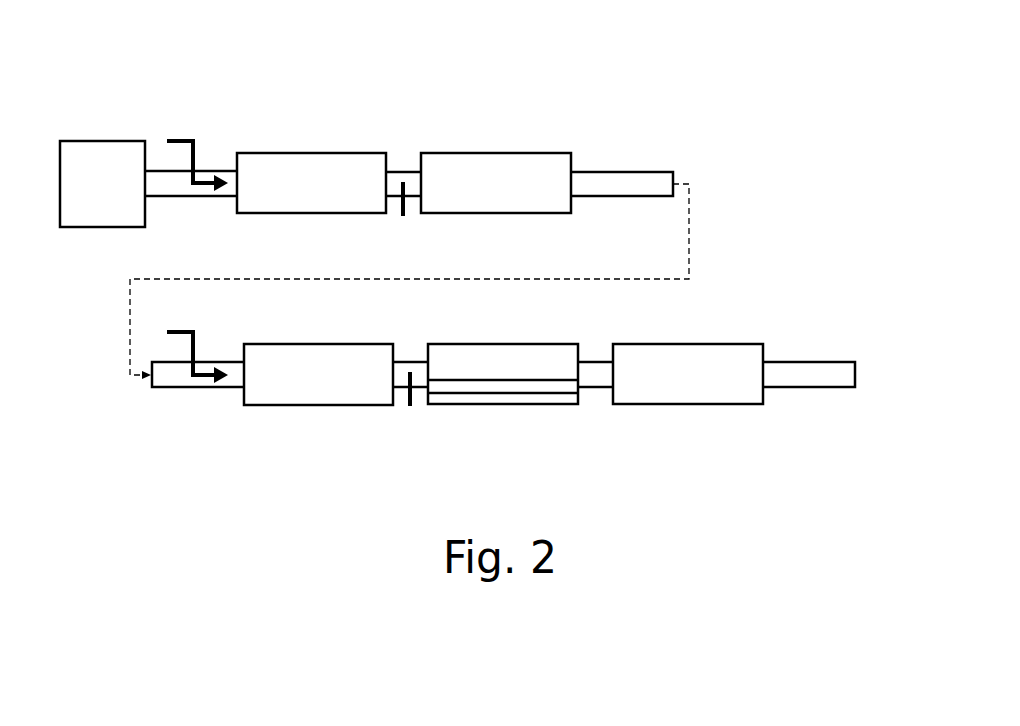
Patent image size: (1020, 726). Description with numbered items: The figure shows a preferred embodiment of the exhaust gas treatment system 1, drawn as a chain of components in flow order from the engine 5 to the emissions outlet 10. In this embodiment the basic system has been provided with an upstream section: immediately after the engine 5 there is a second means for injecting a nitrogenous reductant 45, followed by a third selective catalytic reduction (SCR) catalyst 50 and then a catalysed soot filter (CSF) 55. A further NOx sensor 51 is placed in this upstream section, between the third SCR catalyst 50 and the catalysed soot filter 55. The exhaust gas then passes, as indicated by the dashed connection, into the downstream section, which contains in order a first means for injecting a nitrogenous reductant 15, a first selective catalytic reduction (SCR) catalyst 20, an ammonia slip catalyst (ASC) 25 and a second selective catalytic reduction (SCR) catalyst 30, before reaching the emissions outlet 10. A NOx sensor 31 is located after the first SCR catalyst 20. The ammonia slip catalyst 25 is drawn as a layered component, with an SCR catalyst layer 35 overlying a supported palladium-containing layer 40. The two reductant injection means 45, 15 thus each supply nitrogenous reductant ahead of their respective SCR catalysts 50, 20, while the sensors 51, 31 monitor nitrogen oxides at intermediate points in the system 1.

The exhaust gas treatment system 1 is at (574, 92).
The engine 5 is at (110, 195).
The emissions outlet 10 is at (860, 373).
The first means for injecting a nitrogenous reductant 15 is at (204, 361).
The first selective catalytic reduction (SCR) catalyst 20 is at (304, 386).
The ammonia slip catalyst (ASC) 25 is at (489, 373).
The second selective catalytic reduction (SCR) catalyst 30 is at (674, 386).
The NOx sensor 31 is at (410, 420).
The SCR catalyst layer 35 is at (476, 392).
The supported Palladium (Pd) containing layer 40 is at (558, 406).
The second means for injecting a nitrogenous reductant 45 is at (204, 168).
The third selective catalytic reduction (SCR) catalyst 50 is at (297, 195).
The further NOx sensor 51 is at (405, 223).
The catalysed soot filter (CSF) 55 is at (482, 195).